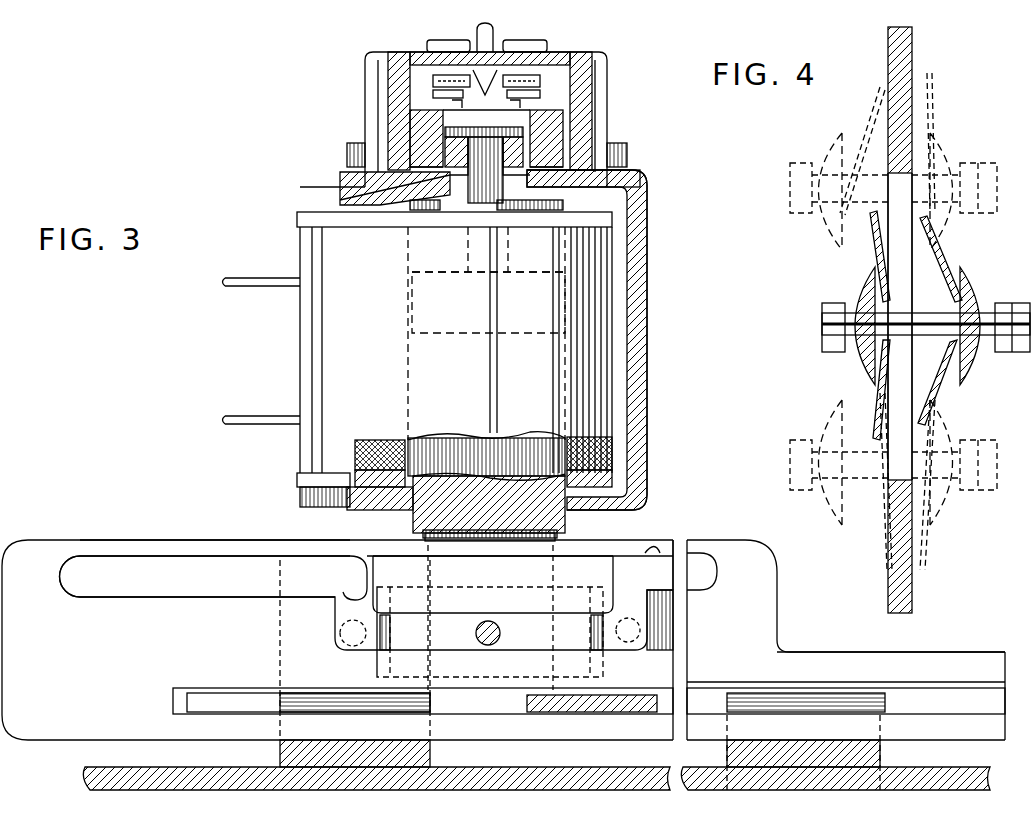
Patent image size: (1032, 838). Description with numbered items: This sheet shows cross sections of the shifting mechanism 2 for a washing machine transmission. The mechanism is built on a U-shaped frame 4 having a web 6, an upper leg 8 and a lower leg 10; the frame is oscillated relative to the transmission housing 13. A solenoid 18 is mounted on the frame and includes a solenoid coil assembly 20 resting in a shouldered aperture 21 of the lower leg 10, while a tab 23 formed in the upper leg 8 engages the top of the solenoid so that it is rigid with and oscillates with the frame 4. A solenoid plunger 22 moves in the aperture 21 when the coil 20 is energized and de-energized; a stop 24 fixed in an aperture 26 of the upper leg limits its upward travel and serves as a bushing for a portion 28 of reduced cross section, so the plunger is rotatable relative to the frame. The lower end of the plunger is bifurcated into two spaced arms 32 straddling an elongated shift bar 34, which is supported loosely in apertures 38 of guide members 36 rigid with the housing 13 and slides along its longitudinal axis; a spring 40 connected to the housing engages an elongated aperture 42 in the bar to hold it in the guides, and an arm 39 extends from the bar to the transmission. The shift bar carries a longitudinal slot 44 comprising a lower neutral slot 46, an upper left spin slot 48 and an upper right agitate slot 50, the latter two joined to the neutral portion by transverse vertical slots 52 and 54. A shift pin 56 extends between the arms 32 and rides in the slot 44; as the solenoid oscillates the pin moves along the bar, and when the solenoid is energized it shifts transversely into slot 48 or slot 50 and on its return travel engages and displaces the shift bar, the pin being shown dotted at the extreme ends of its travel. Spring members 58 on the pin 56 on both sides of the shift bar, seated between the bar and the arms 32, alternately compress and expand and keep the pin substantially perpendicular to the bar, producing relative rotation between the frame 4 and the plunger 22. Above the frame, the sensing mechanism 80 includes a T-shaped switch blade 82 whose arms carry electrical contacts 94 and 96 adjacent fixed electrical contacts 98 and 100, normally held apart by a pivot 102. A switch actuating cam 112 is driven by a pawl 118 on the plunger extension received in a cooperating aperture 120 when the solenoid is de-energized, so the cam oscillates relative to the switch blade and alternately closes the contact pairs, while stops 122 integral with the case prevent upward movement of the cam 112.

In FIG. 3, the shifting mechanism 2 is at (270, 158).
In FIG. 3, the U-shaped frame 4 is at (660, 222).
In FIG. 3, the web 6 is at (647, 280).
In FIG. 3, the upper leg 8 is at (594, 178).
In FIG. 3, the lower leg 10 is at (362, 508).
In FIG. 3, the washing machine transmission housing 13 is at (88, 774).
In FIG. 3, the solenoid 18 is at (298, 367).
In FIG. 3, the solenoid coil assembly 20 is at (355, 452).
In FIG. 3, the shouldered aperture 21 is at (565, 500).
In FIG. 3, the solenoid plunger 22 is at (438, 332).
In FIG. 3, the tab 23 is at (350, 200).
In FIG. 3, the stop 24 is at (412, 272).
In FIG. 3, the aperture 26 is at (435, 205).
In FIG. 3, the portion of reduced cross section 28 is at (488, 195).
In FIG. 3, the arms 32 is at (553, 580).
In FIG. 4, the arms 32 is at (822, 158).
In FIG. 3, the shift bar 34 is at (66, 647).
In FIG. 4, the shift bar 34 is at (912, 48).
In FIG. 3, the guide members 36 is at (285, 754).
In FIG. 3, the apertures 38 is at (295, 700).
In FIG. 3, the arm 39 is at (948, 662).
In FIG. 3, the spring 40 is at (527, 702).
In FIG. 3, the elongated aperture 42 is at (175, 700).
In FIG. 3, the slot 44 is at (147, 575).
In FIG. 4, the slot 44 is at (902, 455).
In FIG. 3, the lower slot 46 is at (518, 615).
In FIG. 4, the lower slot 46 is at (912, 210).
In FIG. 3, the upper left slot 48 is at (228, 556).
In FIG. 3, the upper right slot 50 is at (666, 553).
In FIG. 3, the vertical slot 52 is at (355, 590).
In FIG. 3, the vertical slot 54 is at (640, 587).
In FIG. 3, the shift pin 56 is at (488, 620).
In FIG. 4, the shift pin 56 is at (962, 170).
In FIG. 3, the spring member 58 is at (575, 640).
In FIG. 4, the spring member 58 is at (935, 100).
In FIG. 3, the sensing mechanism 80 is at (612, 72).
In FIG. 3, the T-shaped switch blade 82 is at (484, 155).
In FIG. 3, the electrical contact 94 is at (452, 113).
In FIG. 3, the electrical contact 96 is at (519, 113).
In FIG. 3, the fixed electrical contact 98 is at (448, 66).
In FIG. 3, the fixed electrical contact 100 is at (528, 52).
In FIG. 3, the pivot 102 is at (478, 45).
In FIG. 3, the switch actuating cam 112 is at (628, 153).
In FIG. 3, the pawl 118 is at (548, 125).
In FIG. 3, the aperture 120 is at (420, 132).
In FIG. 3, the stops 122 is at (440, 94).